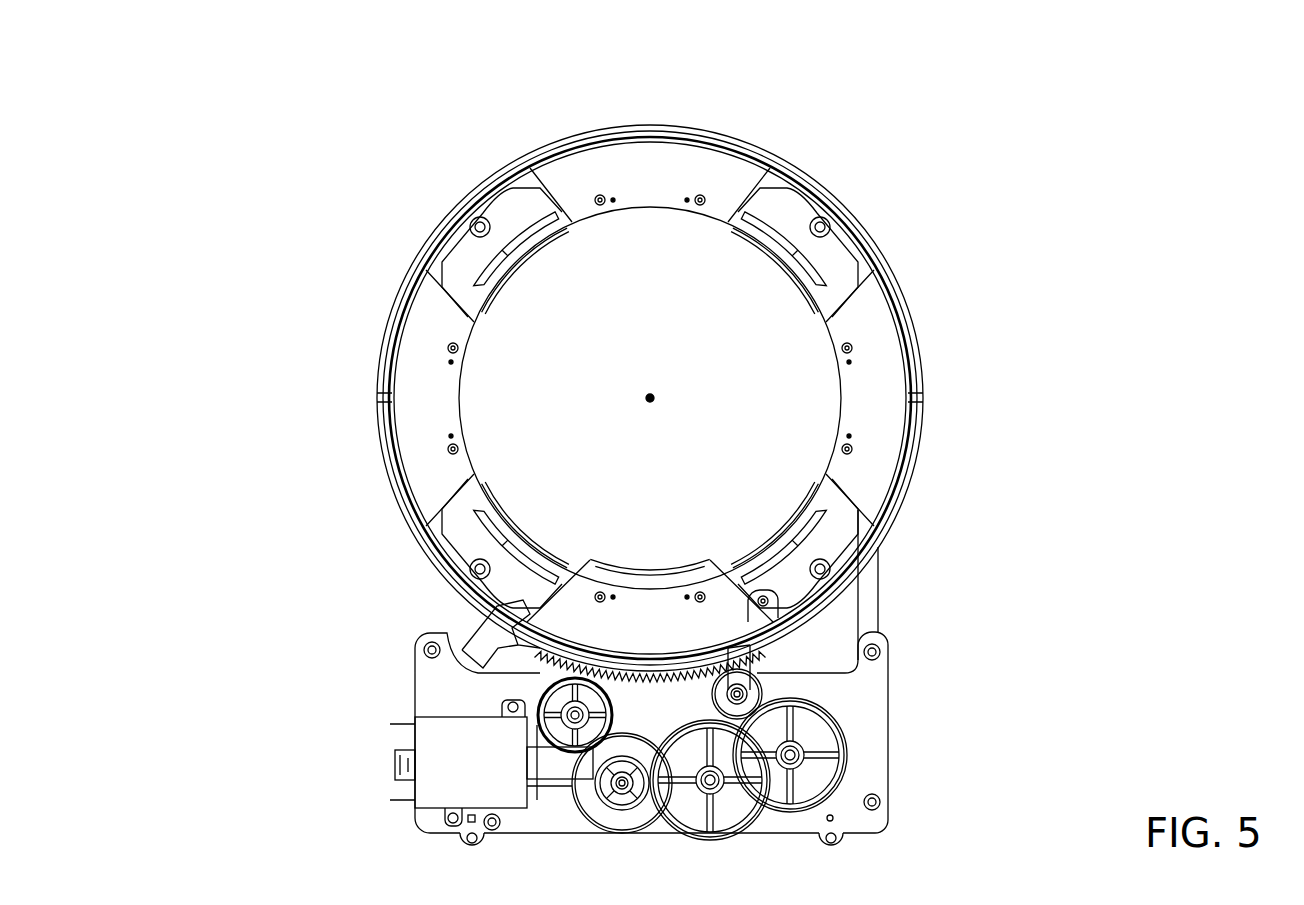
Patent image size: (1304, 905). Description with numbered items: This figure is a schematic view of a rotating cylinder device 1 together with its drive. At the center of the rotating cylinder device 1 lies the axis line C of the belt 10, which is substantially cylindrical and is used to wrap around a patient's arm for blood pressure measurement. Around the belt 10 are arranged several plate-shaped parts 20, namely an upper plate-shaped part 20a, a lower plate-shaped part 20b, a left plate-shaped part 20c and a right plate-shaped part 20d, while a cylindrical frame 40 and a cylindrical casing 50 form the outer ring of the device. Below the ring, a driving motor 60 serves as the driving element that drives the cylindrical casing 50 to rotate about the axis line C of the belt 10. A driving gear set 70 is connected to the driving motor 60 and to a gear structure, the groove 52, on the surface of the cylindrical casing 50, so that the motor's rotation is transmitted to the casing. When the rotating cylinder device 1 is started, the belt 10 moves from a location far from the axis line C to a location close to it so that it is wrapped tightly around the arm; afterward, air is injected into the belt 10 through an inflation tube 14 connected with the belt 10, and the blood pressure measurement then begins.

The rotating cylinder device 1 is at (352, 78).
The belt 10 is at (788, 205).
The inflation tube 14 is at (868, 605).
The plate-shaped parts 20 is at (653, 339).
The upper plate-shaped part 20a is at (668, 176).
The lower plate-shaped part 20b is at (587, 611).
The left plate-shaped part 20c is at (413, 348).
The right plate-shaped part 20d is at (889, 348).
The cylindrical frame 40 is at (493, 197).
The cylindrical casing 50 is at (862, 228).
The groove 52 is at (652, 665).
The driving motor 60 is at (442, 741).
The driving gear set 70 is at (857, 736).
The axis line C is at (660, 398).